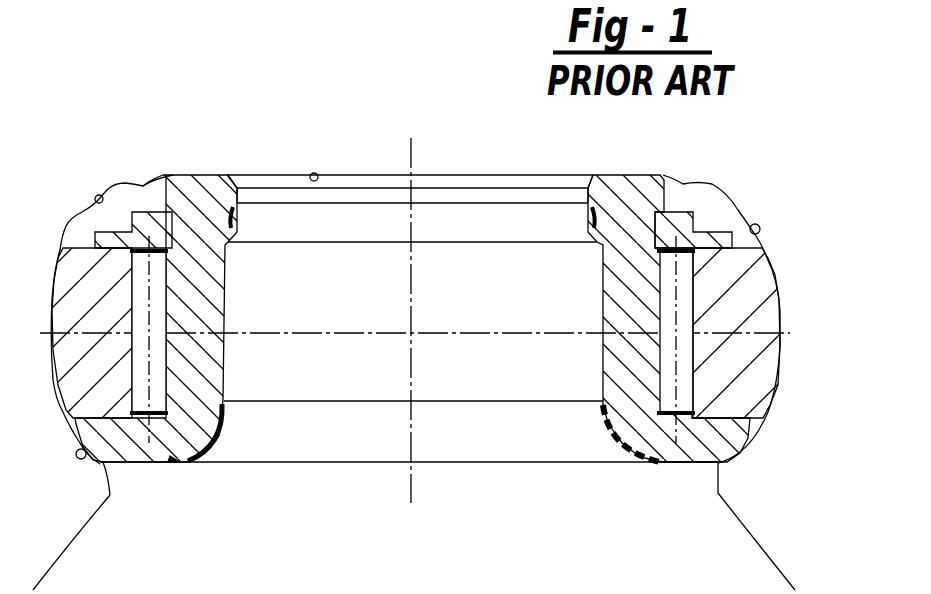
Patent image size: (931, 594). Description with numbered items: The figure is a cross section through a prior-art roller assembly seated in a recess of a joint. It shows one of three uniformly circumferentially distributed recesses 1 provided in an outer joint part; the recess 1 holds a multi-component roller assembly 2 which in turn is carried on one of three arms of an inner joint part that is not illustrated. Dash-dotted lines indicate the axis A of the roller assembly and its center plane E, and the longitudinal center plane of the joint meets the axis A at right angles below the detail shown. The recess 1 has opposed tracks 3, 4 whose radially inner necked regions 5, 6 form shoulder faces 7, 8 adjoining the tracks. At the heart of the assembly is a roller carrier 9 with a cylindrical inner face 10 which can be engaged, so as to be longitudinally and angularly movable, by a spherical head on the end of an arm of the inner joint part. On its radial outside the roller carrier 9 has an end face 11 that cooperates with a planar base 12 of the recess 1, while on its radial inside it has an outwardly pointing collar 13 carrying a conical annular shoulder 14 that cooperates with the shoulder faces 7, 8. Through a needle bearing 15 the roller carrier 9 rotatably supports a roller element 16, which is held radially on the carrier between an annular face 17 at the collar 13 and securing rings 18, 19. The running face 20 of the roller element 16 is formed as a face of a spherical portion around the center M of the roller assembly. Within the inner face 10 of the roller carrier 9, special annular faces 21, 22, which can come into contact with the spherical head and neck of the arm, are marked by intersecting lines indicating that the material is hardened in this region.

The recess 1 is at (101, 197).
The roller assembly 2 is at (243, 231).
The track 3 is at (62, 246).
The track 4 is at (757, 224).
The necked region 5 is at (82, 490).
The necked region 6 is at (743, 476).
The shoulder face 7 is at (113, 468).
The shoulder face 8 is at (718, 465).
The roller carrier 9 is at (199, 188).
The cylindrical inner face 10 is at (228, 406).
The end face 11 is at (186, 176).
The planar base 12 is at (316, 173).
The collar 13 is at (176, 438).
The conical annular shoulder 14 is at (86, 455).
The needle bearing 15 is at (660, 295).
The roller element 16 is at (732, 270).
The annular face 17 is at (735, 405).
The securing ring 18 is at (646, 212).
The securing ring 19 is at (679, 284).
The running face 20 is at (780, 285).
The annular face 21 is at (597, 220).
The annular face 22 is at (605, 430).
The axis A is at (414, 150).
The center plane E is at (258, 333).
The center M is at (411, 333).